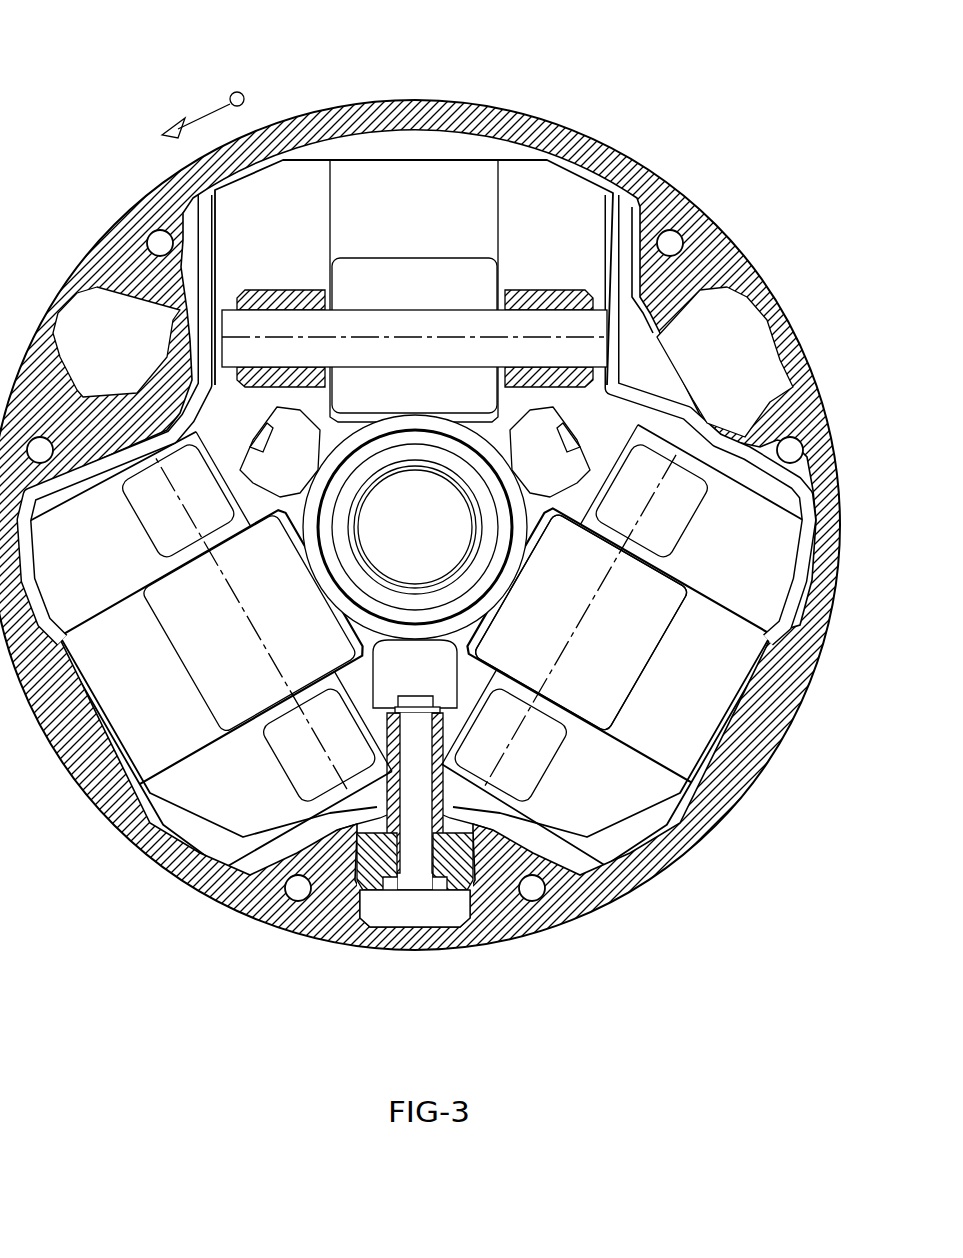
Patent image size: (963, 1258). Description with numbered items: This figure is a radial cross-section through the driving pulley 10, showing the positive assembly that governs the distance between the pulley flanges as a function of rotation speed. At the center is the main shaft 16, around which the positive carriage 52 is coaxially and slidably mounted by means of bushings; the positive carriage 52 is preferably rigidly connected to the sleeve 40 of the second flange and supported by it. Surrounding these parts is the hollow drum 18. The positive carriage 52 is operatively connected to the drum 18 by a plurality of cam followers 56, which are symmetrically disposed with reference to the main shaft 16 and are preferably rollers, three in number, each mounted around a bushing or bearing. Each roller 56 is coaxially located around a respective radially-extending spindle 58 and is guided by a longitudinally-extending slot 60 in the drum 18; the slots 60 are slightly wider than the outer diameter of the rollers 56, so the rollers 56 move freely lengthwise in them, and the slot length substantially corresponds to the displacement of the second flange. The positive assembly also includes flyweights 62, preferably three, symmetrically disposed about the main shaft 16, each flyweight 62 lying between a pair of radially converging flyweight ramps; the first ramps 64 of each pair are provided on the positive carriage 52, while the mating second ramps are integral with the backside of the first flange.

The driving pulley 10 is at (137, 66).
The main shaft 16 is at (400, 543).
The hollow drum 18 is at (745, 795).
The sleeve 40 is at (437, 600).
The positive carriage 52 is at (622, 228).
The cam followers 56 is at (347, 870).
The spindles 58 is at (407, 872).
The slots 60 is at (433, 907).
The flyweights 62 is at (580, 672).
The first ramps 64 is at (590, 783).